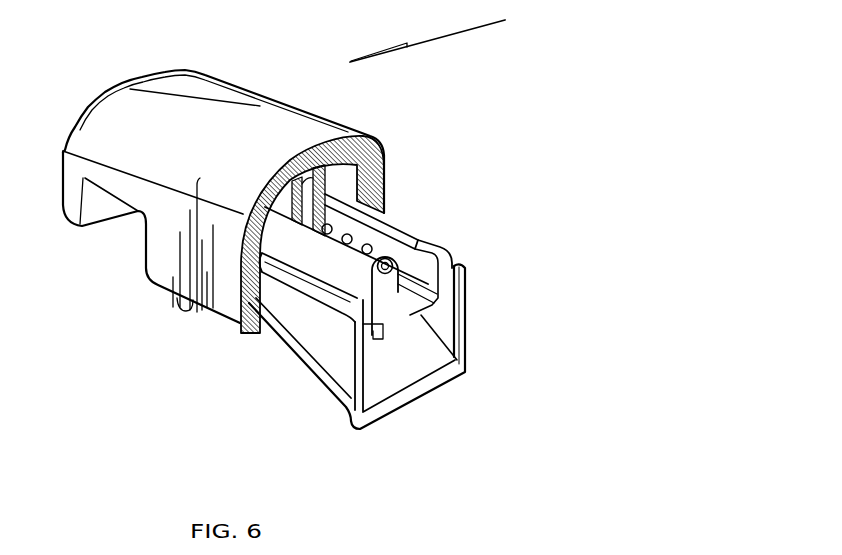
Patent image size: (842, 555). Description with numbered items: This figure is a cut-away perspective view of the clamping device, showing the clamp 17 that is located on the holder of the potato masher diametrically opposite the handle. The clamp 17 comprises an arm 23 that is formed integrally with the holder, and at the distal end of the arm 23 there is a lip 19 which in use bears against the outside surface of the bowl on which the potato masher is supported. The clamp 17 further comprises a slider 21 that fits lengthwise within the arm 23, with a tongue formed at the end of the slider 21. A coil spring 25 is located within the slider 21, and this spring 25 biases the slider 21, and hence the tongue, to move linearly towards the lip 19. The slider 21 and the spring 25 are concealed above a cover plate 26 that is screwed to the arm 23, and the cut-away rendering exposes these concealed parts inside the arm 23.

The clamp 17 is at (440, 34).
The lip 19 is at (98, 213).
The slider 21 is at (418, 238).
The arm 23 is at (313, 133).
The coil spring 25 is at (396, 271).
The cover plate 26 is at (395, 378).